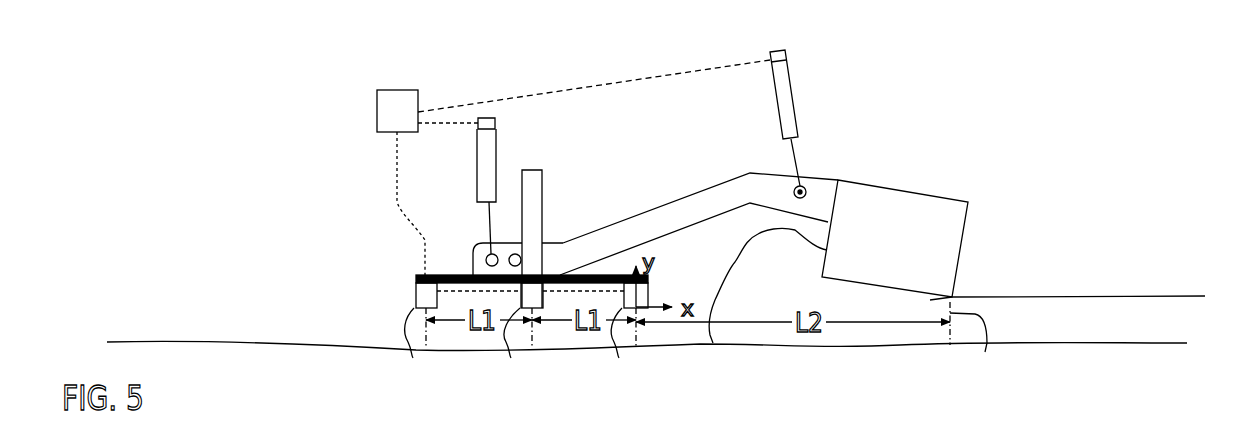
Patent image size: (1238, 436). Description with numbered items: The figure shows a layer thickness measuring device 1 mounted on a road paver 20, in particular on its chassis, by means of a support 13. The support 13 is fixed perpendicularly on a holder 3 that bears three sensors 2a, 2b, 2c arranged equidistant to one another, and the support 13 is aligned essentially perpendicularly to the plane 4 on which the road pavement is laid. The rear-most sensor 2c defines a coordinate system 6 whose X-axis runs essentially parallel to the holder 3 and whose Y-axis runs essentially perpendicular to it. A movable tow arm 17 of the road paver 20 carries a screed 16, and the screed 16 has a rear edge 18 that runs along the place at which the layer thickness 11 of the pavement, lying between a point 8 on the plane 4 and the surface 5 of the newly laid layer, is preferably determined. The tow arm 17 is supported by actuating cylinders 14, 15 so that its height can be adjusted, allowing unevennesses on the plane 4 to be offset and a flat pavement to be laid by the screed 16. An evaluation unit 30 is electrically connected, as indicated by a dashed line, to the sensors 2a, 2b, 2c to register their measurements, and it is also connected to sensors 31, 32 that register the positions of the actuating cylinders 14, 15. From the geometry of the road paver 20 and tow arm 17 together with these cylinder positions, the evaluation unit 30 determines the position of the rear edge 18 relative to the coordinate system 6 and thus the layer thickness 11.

The layer thickness measuring device 1 is at (368, 187).
The sensor 2a is at (416, 358).
The sensor 2b is at (514, 358).
The sensor 2c is at (620, 358).
The holder 3 is at (420, 274).
The plane 4 is at (315, 340).
The surface 5 is at (1081, 296).
The coordinate system 6 is at (650, 288).
The point 8 is at (950, 346).
The layer thickness 11 is at (985, 352).
The support 13 is at (530, 170).
The actuating cylinder 14 is at (486, 222).
The actuating cylinder 15 is at (797, 152).
The screed 16 is at (953, 200).
The tow arm 17 is at (650, 208).
The rear edge 18 is at (960, 290).
The road paver 20 is at (521, 94).
The evaluation unit 30 is at (397, 90).
The sensor 31 is at (481, 118).
The sensor 32 is at (786, 52).